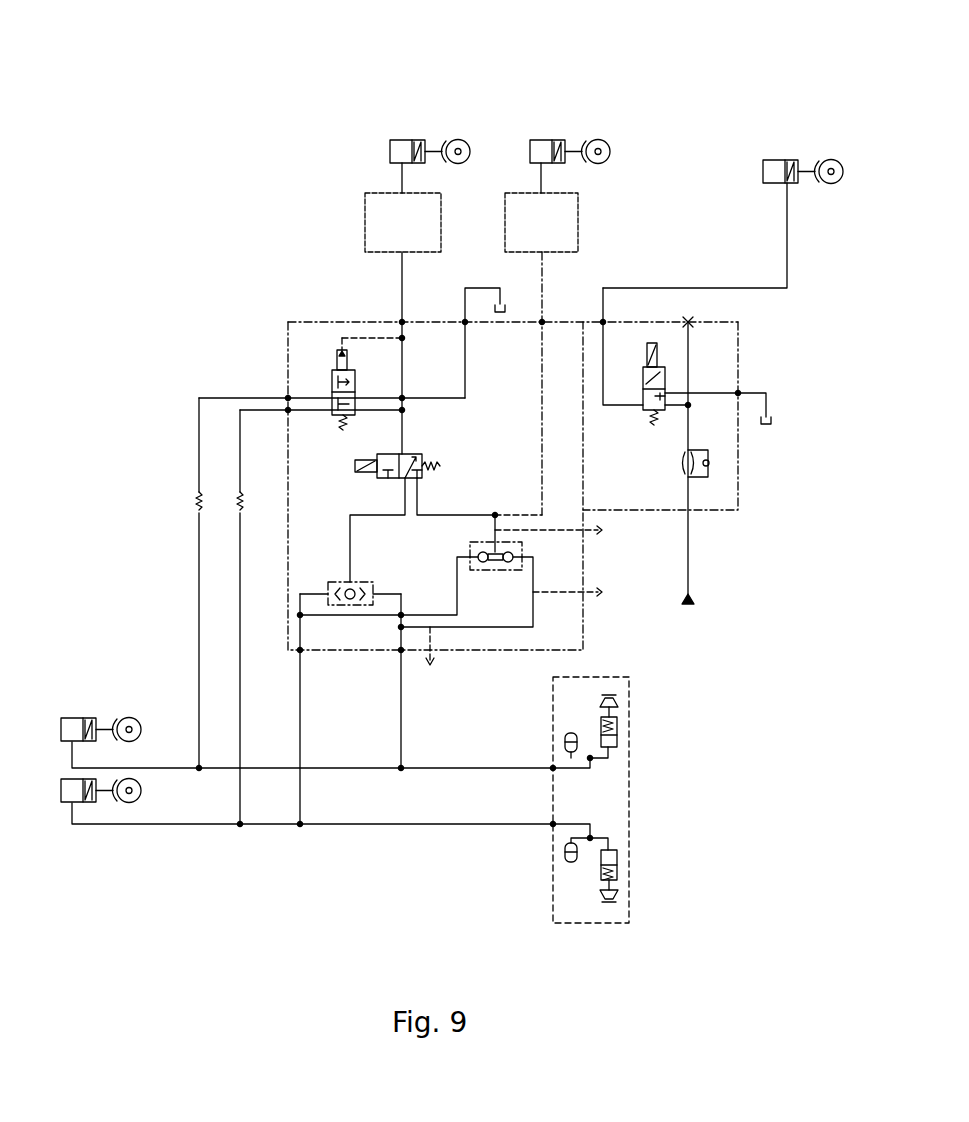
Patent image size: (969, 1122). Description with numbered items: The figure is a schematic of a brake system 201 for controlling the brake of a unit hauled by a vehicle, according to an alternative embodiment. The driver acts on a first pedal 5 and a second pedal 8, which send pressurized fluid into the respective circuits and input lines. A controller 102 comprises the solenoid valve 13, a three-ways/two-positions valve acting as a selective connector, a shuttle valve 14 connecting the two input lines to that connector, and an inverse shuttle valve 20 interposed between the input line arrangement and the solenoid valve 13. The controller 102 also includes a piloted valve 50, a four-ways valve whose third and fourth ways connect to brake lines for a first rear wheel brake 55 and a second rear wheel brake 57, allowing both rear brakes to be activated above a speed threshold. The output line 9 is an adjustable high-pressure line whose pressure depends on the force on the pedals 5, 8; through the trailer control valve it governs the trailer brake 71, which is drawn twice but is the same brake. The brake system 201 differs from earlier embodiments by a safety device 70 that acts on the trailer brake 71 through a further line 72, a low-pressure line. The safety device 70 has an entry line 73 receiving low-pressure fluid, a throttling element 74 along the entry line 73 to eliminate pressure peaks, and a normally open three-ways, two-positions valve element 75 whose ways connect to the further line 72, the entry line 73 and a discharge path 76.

The brake system 201 is at (226, 200).
The trailer brake 71 is at (777, 146).
The further line 72 is at (788, 245).
The output line 9 is at (402, 292).
The controller 102 is at (286, 330).
The piloted valve 50 is at (332, 380).
The solenoid valve 13 is at (412, 452).
The shuttle valve 14 is at (331, 580).
The inverse shuttle valve 20 is at (489, 573).
The valve element 75 is at (668, 376).
The discharge path 76 is at (771, 401).
The throttling element 74 is at (724, 471).
The entry line 73 is at (692, 496).
The safety device 70 is at (722, 512).
The first rear wheel brake 55 is at (77, 698).
The second rear wheel brake 57 is at (76, 845).
The first pedal 5 is at (613, 700).
The second pedal 8 is at (598, 904).